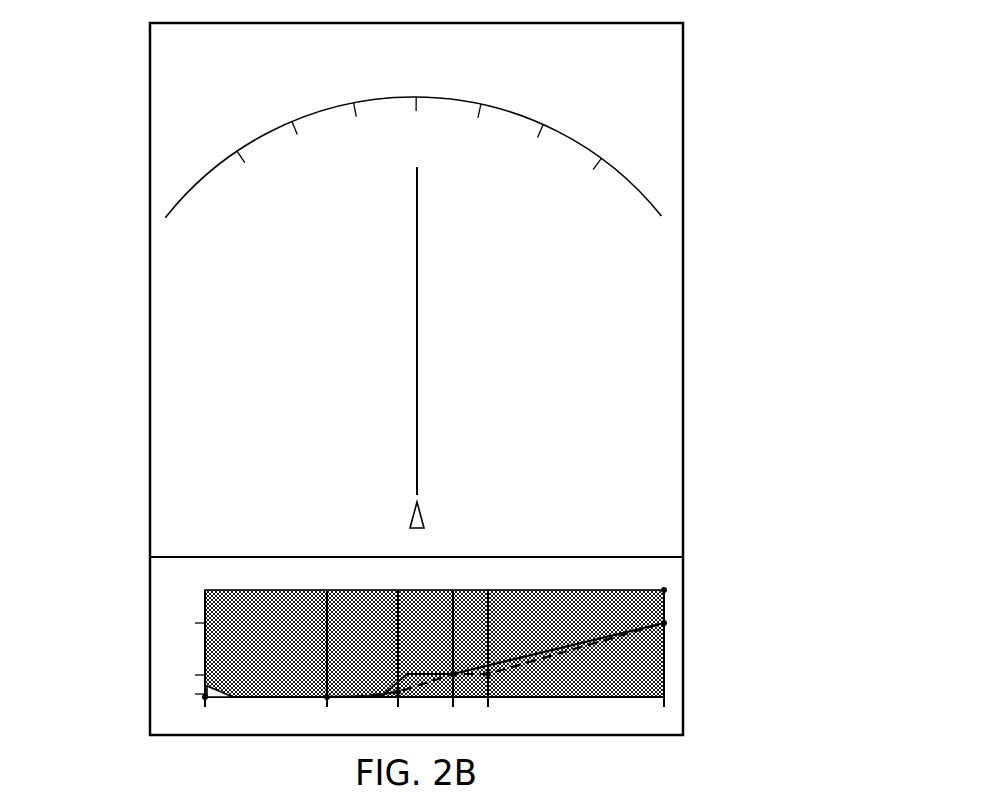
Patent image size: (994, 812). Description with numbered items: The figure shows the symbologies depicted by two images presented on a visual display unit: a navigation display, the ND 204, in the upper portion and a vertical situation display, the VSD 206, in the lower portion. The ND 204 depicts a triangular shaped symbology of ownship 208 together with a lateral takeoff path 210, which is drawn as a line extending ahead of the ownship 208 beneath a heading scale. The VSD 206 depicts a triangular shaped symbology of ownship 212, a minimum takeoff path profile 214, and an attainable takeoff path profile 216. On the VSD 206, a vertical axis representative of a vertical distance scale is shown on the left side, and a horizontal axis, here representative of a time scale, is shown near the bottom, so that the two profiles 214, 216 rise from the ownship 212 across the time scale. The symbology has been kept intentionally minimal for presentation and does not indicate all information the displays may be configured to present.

The ND 204 is at (140, 291).
The vertical situation display 206 is at (140, 647).
The ownship 208 is at (392, 507).
The lateral takeoff path 210 is at (428, 333).
The ownship 212 is at (219, 665).
The minimum takeoff path profile 214 is at (547, 645).
The attainable takeoff path profile 216 is at (562, 660).